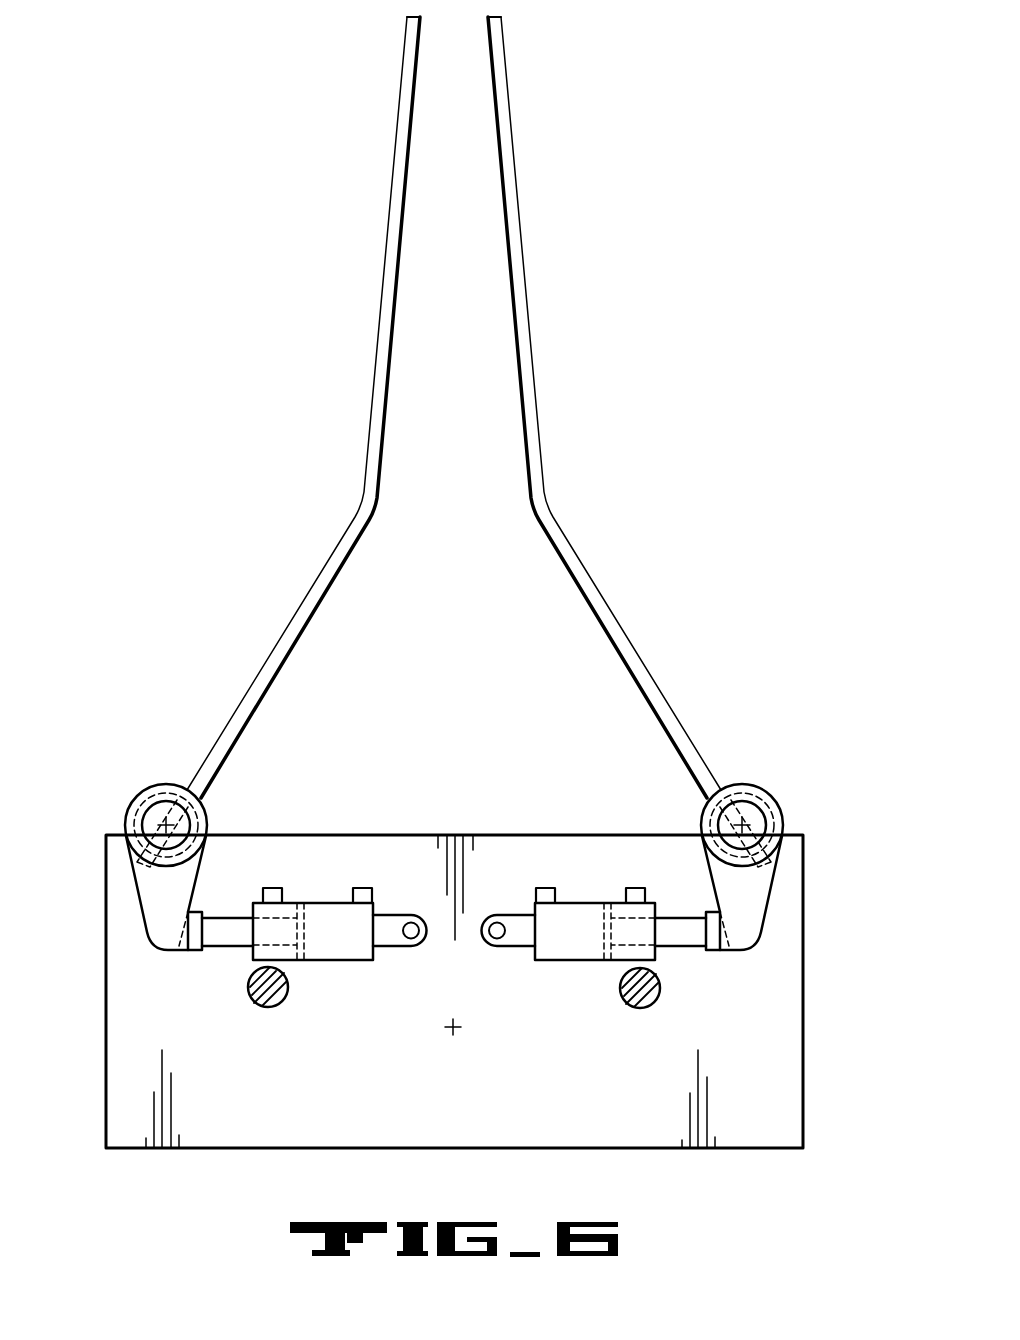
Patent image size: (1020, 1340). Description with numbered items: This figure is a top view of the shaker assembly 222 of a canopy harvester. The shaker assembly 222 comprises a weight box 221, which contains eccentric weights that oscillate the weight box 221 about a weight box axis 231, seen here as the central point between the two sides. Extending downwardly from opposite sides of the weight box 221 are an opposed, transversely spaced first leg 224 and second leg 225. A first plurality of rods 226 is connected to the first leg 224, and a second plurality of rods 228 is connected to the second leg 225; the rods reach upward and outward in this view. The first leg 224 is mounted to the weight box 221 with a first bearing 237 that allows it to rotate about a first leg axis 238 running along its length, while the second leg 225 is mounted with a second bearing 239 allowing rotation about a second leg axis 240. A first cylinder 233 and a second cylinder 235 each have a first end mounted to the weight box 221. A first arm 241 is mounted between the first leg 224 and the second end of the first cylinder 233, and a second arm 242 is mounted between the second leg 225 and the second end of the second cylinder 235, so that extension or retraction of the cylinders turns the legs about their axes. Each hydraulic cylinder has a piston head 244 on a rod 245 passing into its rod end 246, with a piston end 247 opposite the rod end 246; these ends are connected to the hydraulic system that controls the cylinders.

The weight box 221 is at (805, 1090).
The shaker assembly 222 is at (478, 407).
The first leg 224 is at (143, 818).
The second leg 225 is at (767, 818).
The first plurality of rods 226 is at (377, 340).
The second plurality of rods 228 is at (527, 275).
The weight box axis 231 is at (458, 1030).
The first cylinder 233 is at (312, 963).
The second cylinder 235 is at (593, 966).
The first bearing 237 is at (158, 793).
The first leg axis 238 is at (166, 825).
The second bearing 239 is at (757, 800).
The second leg axis 240 is at (745, 830).
The first arm 241 is at (200, 873).
The second arm 242 is at (708, 870).
The piston head 244 is at (305, 903).
The rod 245 is at (218, 948).
The rod end 246 is at (253, 960).
The piston end 247 is at (533, 955).